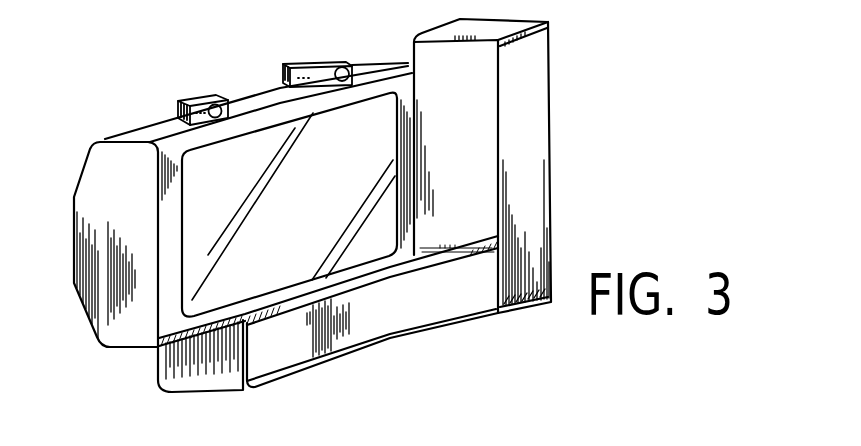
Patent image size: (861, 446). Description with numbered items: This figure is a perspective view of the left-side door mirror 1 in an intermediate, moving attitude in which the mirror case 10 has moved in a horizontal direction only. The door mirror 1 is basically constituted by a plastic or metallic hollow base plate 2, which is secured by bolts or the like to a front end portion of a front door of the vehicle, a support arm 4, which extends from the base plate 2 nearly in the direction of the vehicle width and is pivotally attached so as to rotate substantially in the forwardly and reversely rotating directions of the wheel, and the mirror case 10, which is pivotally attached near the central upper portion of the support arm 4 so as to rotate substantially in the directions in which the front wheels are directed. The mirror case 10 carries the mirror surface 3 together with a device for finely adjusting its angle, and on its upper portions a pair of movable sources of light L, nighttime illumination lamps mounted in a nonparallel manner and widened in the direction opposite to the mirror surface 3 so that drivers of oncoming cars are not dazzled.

The door mirror 1 is at (309, 218).
The base plate 2 is at (541, 179).
The mirror surface 3 is at (300, 212).
The support arm 4 is at (355, 340).
The mirror case 10 is at (96, 239).
The movable sources of light L is at (233, 18).